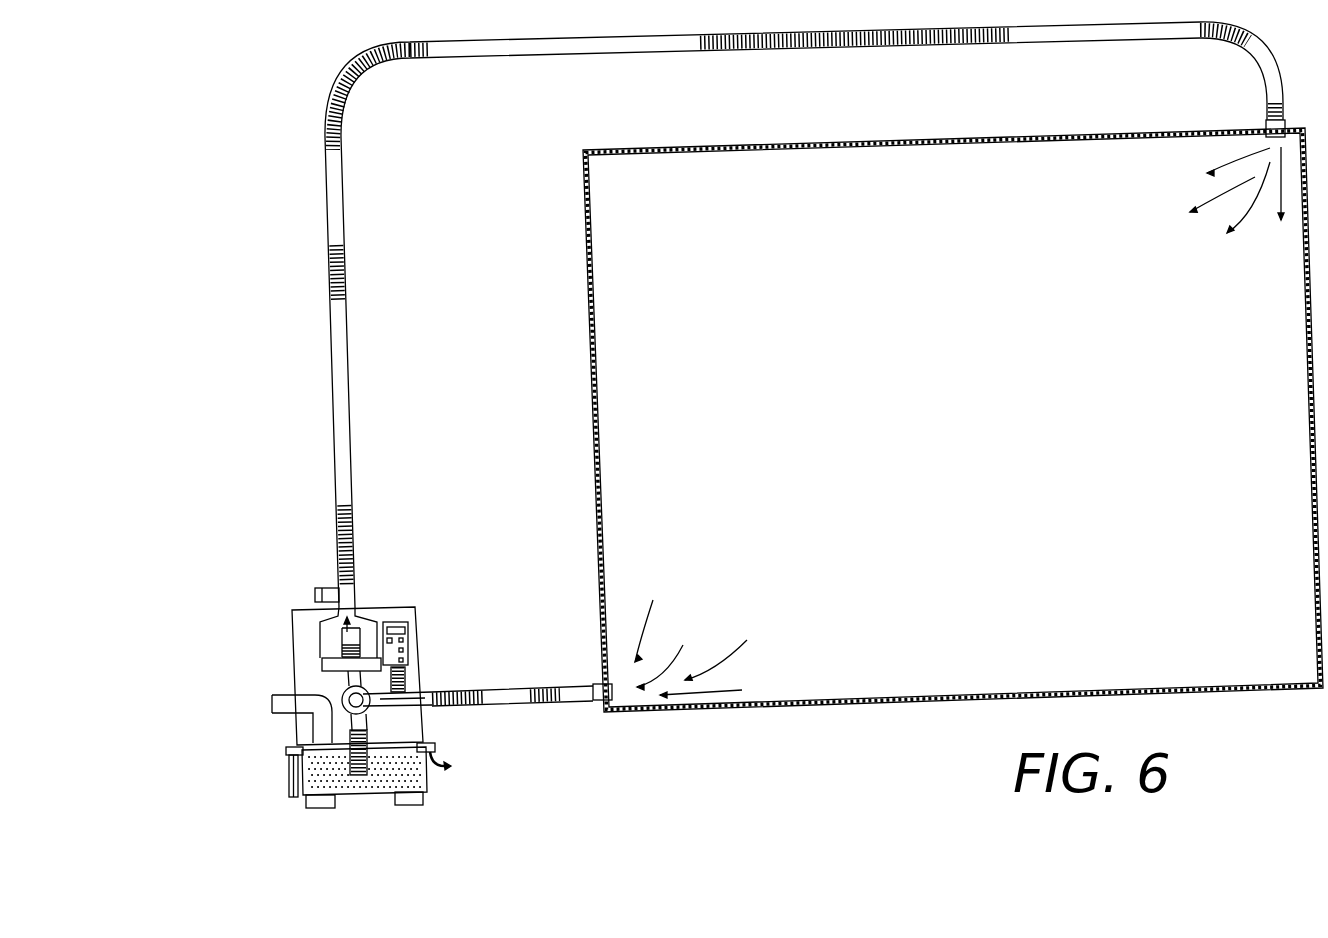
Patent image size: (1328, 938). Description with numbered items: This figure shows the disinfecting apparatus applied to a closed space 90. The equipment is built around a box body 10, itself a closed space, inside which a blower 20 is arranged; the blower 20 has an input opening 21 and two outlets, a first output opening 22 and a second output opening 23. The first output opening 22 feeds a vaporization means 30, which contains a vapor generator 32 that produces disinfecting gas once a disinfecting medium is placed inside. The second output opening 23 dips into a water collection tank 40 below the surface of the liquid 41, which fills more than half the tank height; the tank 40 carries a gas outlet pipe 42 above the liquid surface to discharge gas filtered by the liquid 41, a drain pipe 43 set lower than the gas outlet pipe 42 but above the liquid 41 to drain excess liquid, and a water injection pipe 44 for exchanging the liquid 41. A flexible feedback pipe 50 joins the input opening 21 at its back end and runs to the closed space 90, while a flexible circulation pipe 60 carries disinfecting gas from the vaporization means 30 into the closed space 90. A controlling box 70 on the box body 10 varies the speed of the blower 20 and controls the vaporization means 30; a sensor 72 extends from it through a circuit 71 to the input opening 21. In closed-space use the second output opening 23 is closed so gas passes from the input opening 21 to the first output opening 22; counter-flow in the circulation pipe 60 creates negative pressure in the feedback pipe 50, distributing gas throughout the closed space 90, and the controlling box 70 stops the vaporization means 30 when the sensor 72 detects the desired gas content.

The box body 10 is at (290, 620).
The blower 20 is at (340, 693).
The input opening 21 is at (423, 708).
The first output opening 22 is at (340, 680).
The second output opening 23 is at (423, 715).
The vaporization means 30 is at (312, 612).
The vapor generator 32 is at (320, 636).
The water collection tank 40 is at (203, 760).
The liquid 41 is at (290, 777).
The gas outlet pipe 42 is at (320, 732).
The drain pipe 43 is at (287, 752).
The water injection pipe 44 is at (433, 748).
The feedback pipe 50 is at (557, 702).
The circulation pipe 60 is at (357, 580).
The controlling box 70 is at (408, 636).
The circuit 71 is at (408, 655).
The sensor 72 is at (410, 685).
The closed space 90 is at (588, 453).